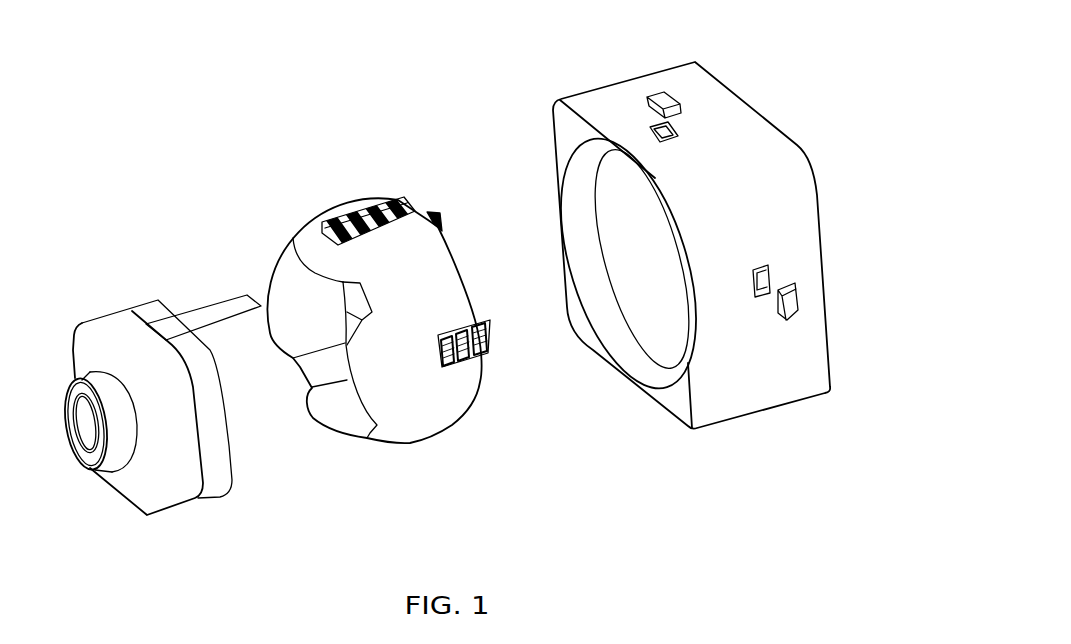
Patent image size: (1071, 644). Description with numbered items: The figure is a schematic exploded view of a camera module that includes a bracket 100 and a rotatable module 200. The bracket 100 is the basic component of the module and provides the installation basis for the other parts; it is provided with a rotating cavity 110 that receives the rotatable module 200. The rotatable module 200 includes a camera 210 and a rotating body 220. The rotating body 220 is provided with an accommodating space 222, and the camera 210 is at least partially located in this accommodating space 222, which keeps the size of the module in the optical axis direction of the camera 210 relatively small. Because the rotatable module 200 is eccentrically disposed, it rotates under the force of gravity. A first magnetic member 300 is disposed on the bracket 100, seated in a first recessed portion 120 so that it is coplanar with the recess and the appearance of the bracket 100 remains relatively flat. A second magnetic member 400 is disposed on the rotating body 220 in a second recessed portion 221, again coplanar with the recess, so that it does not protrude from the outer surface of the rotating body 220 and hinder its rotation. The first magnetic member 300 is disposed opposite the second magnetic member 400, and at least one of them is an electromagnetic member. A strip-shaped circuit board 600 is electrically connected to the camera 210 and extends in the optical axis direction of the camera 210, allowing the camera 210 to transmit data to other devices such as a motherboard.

The bracket 100 is at (747, 387).
The rotating cavity 110 is at (663, 333).
The first recessed portion 120 is at (650, 130).
The first magnetic member 300 is at (665, 105).
The rotatable module 200 is at (417, 518).
The camera 210 is at (220, 433).
The rotating body 220 is at (388, 403).
The second recessed portion 221 is at (417, 207).
The accommodating space 222 is at (313, 330).
The second magnetic member 400 is at (350, 217).
The strip-shaped circuit board 600 is at (210, 318).